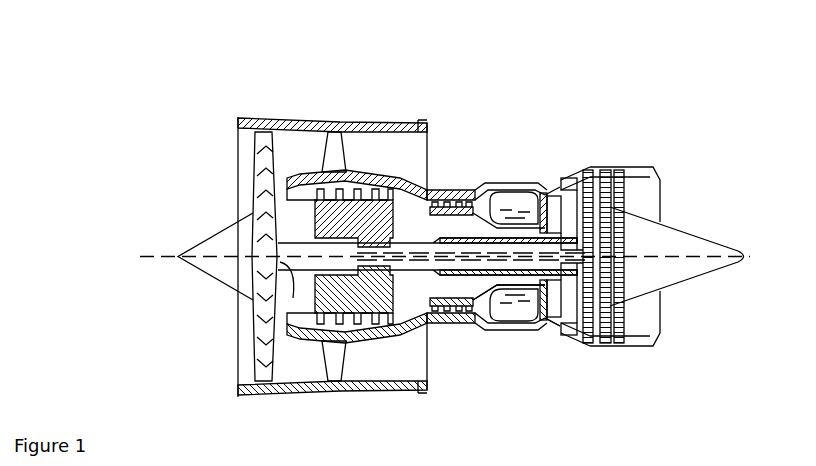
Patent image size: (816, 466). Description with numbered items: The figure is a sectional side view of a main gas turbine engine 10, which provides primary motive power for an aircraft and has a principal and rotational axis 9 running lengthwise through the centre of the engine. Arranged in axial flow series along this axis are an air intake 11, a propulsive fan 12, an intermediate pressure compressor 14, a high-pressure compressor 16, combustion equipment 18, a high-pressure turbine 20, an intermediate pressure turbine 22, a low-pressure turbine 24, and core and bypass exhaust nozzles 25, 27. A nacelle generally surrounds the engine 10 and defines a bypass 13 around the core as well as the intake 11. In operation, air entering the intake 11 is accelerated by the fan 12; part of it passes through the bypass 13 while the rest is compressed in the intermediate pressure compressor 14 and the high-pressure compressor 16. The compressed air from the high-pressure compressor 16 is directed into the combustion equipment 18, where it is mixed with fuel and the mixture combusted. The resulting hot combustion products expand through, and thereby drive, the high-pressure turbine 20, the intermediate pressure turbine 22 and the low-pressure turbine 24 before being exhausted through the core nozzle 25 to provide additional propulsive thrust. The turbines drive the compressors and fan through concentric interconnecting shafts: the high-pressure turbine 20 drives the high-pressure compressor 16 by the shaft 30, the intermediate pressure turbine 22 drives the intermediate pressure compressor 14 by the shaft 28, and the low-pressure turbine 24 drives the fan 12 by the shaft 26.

The principal and rotational axis 9 is at (140, 256).
The main gas turbine engine 10 is at (522, 70).
The air intake 11 is at (247, 143).
The propulsive fan 12 is at (258, 183).
The bypass 13 is at (409, 160).
The intermediate pressure compressor 14 is at (296, 170).
The high-pressure compressor 16 is at (480, 190).
The combustion equipment 18 is at (520, 200).
The high-pressure turbine 20 is at (545, 190).
The intermediate pressure turbine 22 is at (572, 180).
The low-pressure turbine 24 is at (623, 163).
The core exhaust nozzle 25 is at (653, 209).
The interconnecting shaft 26 is at (293, 262).
The bypass exhaust nozzle 27 is at (432, 150).
The interconnecting shaft 28 is at (465, 272).
The interconnecting shaft 30 is at (527, 313).